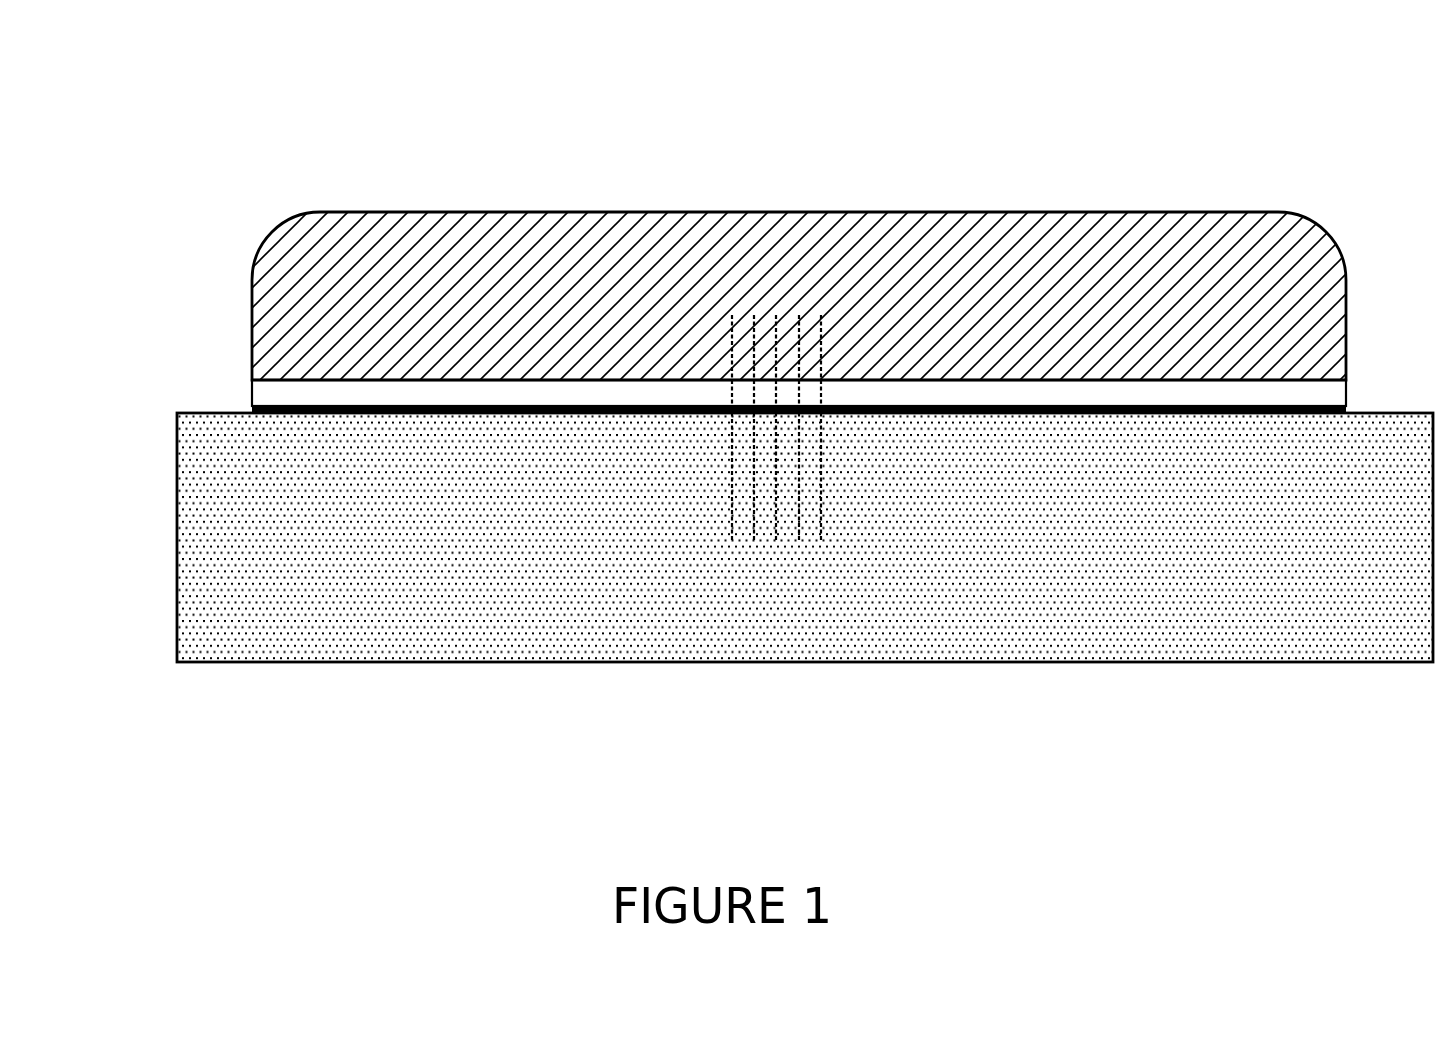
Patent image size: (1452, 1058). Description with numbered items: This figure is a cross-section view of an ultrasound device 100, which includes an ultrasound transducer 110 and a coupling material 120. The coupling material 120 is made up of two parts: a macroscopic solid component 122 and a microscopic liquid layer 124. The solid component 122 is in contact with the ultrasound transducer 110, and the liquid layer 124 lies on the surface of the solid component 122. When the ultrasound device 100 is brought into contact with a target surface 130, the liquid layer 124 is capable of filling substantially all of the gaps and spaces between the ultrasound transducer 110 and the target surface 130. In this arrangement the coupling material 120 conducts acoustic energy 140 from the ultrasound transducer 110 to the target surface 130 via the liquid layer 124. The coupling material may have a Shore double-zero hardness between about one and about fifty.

The ultrasound device 100 is at (258, 88).
The ultrasound transducer 110 is at (232, 296).
The coupling material 120 is at (765, 408).
The solid component 122 is at (1350, 390).
The liquid layer 124 is at (1284, 414).
The target surface 130 is at (805, 537).
The acoustic energy 140 is at (830, 478).